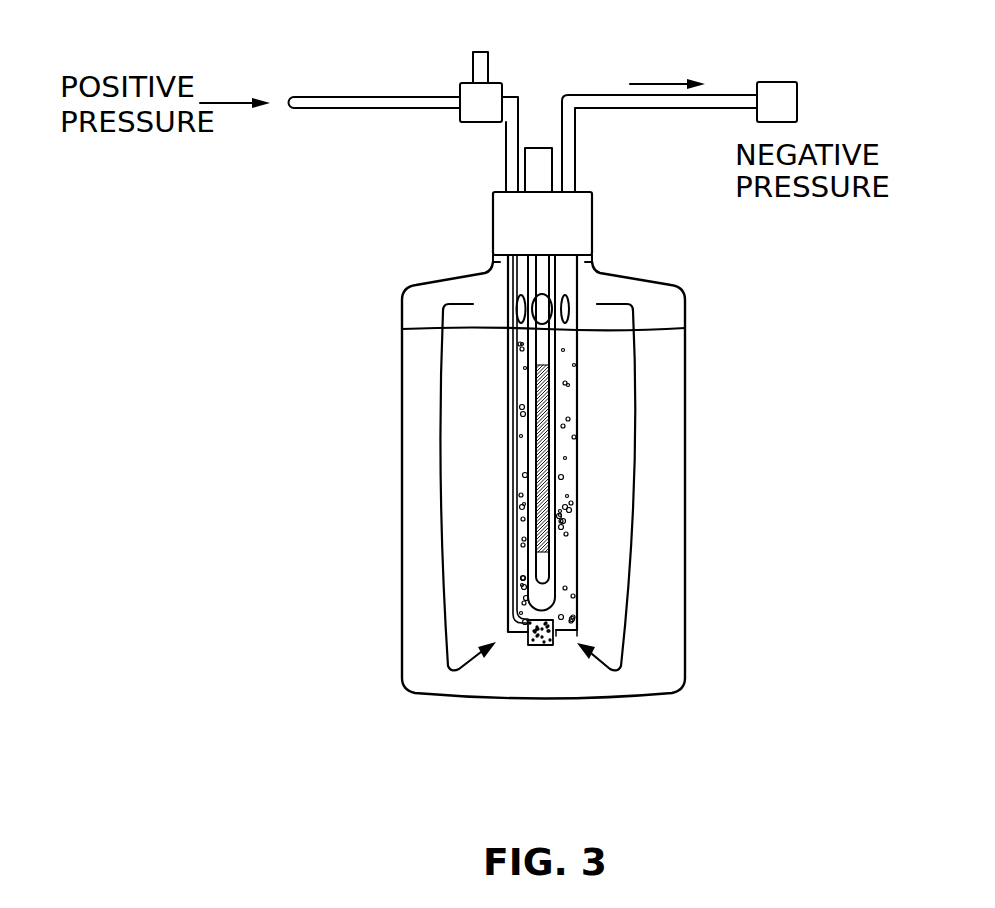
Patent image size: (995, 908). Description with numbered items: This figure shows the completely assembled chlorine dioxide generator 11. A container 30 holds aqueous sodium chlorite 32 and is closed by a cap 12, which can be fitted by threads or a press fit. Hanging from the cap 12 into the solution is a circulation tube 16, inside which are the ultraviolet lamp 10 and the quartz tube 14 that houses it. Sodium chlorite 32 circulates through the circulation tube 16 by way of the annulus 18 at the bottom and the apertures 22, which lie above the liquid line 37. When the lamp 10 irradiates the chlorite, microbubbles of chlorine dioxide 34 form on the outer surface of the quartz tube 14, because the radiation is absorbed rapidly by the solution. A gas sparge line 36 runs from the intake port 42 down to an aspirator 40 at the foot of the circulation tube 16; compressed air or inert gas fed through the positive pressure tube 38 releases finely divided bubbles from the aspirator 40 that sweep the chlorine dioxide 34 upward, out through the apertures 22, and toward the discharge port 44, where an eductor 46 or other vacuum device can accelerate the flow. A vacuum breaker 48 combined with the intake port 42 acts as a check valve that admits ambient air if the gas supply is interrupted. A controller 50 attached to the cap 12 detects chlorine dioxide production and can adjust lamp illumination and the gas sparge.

The ultraviolet lamp 10 is at (542, 445).
The chlorine dioxide generator 11 is at (805, 548).
The cap 12 is at (497, 230).
The quartz tube 14 is at (555, 558).
The circulation tube 16 is at (577, 385).
The annulus 18 is at (562, 633).
The apertures 22 is at (570, 305).
The container 30 is at (402, 388).
The aqueous sodium chlorite 32 is at (410, 492).
The chlorine dioxide 34 is at (565, 505).
The gas sparge line 36 is at (515, 553).
The liquid line 37 is at (412, 328).
The positive pressure line 38 is at (350, 100).
The aspirator 40 is at (533, 648).
The intake port 42 is at (507, 182).
The discharge port 44 is at (568, 183).
The eductor 46 is at (778, 82).
The vacuum breaker 48 is at (468, 88).
The controller 50 is at (538, 148).